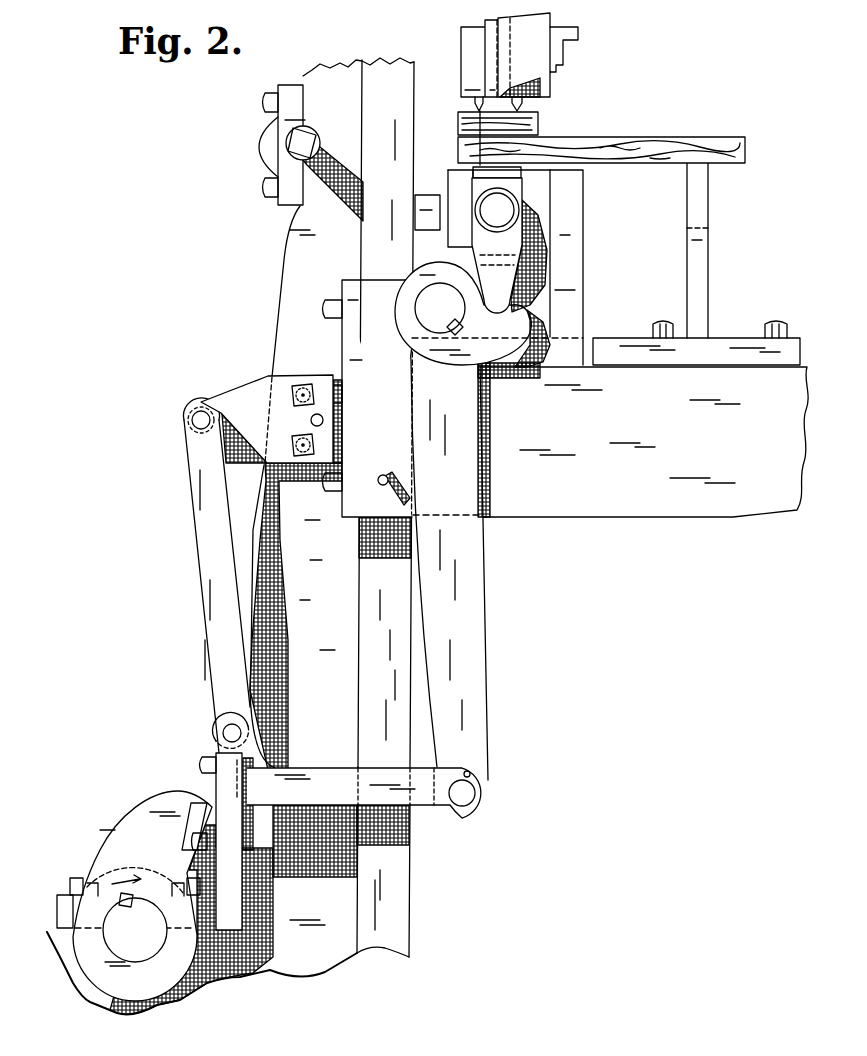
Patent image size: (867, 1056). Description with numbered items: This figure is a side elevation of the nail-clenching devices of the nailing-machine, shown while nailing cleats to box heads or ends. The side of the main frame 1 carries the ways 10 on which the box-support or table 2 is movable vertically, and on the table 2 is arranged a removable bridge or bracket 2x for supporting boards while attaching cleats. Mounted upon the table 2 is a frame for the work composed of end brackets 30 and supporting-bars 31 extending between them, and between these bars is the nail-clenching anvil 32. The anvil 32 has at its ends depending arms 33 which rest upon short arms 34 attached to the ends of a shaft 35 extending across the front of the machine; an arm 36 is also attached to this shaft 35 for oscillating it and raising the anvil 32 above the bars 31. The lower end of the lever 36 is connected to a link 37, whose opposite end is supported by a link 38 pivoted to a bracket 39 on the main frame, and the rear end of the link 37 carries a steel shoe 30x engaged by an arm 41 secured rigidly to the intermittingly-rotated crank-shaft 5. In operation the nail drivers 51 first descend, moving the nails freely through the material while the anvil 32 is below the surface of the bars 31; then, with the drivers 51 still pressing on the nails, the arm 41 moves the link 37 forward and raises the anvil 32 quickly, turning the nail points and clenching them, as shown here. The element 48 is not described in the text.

The side of the main frame 1 is at (230, 536).
The box-support or table 2 is at (644, 419).
The bridge or bracket 2x is at (703, 257).
The crank-shaft 5 is at (135, 929).
The ways 10 is at (369, 508).
The end brackets 30 is at (499, 267).
The steel shoe 30x is at (217, 795).
The supporting-bars 31 is at (540, 187).
The nail-clenching anvil or bar 32 is at (514, 170).
The depending arms 33 is at (509, 245).
The short arms 34 is at (531, 338).
The shaft 35 is at (463, 313).
The arm or lever 36 is at (475, 557).
The link 37 is at (364, 793).
The link 38 is at (217, 575).
The bracket 39 is at (271, 419).
The arm or lever 41 is at (134, 896).
The tool holder 48 is at (578, 38).
The nail drivers or punches 51 is at (523, 108).